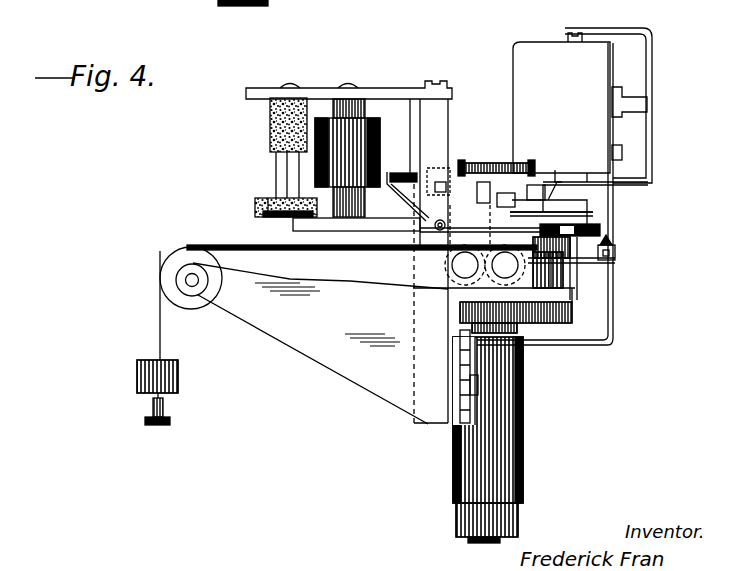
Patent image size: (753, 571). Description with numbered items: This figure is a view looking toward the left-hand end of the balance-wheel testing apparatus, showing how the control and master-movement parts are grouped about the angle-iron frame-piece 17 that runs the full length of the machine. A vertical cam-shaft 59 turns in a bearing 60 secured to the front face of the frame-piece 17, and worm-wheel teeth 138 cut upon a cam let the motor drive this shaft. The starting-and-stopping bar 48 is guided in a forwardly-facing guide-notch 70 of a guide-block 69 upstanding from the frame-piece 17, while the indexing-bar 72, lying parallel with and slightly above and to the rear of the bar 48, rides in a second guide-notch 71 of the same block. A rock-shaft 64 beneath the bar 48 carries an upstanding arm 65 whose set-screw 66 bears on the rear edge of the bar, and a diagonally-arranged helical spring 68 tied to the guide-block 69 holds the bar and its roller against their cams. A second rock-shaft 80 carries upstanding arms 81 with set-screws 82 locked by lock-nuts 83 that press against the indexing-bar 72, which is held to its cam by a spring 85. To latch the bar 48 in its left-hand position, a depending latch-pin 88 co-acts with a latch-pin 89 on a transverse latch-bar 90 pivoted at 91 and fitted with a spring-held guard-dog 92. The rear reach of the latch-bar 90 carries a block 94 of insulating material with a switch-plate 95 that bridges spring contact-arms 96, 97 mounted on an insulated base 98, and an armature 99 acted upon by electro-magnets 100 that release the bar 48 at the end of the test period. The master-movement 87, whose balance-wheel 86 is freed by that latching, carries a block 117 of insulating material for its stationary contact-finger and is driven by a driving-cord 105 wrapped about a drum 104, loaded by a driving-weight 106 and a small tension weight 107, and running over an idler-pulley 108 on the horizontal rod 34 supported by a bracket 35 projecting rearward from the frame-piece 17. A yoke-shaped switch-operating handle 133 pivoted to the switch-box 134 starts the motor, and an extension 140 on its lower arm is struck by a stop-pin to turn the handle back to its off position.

The angle-iron frame-piece 17 is at (456, 416).
The horizontal rod 34 is at (189, 288).
The bracket 35 is at (316, 356).
The starting-and-stopping bar 48 is at (585, 208).
The cam-shaft 59 is at (490, 539).
The bearing 60 is at (523, 423).
The rock-shaft 64 is at (547, 327).
The upstanding arm 65 is at (503, 267).
The set-screw 66 is at (480, 163).
The helical spring 68 is at (498, 163).
The guide-block 69 is at (443, 258).
The guide-notch 70 is at (535, 182).
The guide-notch 71 is at (456, 175).
The indexing-bar 72 is at (514, 173).
The rock-shaft 80 is at (465, 268).
The upstanding arm 81 is at (433, 231).
The set-screw 82 is at (408, 197).
The lock-nut 83 is at (422, 177).
The spring 85 is at (392, 172).
The balance-wheel 86 is at (625, 242).
The master-movement 87 is at (560, 260).
The latch-pin 88 is at (548, 180).
The latch-pin 89 is at (548, 182).
The latch-bar 90 is at (355, 232).
The pivot 91 is at (415, 249).
The guard-dog 92 is at (560, 215).
The block of insulating material 94 is at (257, 213).
The switch-plate 95 is at (268, 200).
The spring contact-arm 96 is at (277, 166).
The spring contact-arm 97 is at (290, 216).
The insulated base 98 is at (270, 121).
The armature 99 is at (345, 207).
The electro-magnet 100 is at (316, 122).
The drum 104 is at (595, 263).
The driving-cord 105 is at (158, 318).
The driving-weight 106 is at (137, 374).
The tension weight 107 is at (159, 426).
The idler-pulley 108 is at (167, 273).
The block of insulating material 117 is at (590, 228).
The switch-operating handle 133 is at (652, 62).
The switch-box 134 is at (522, 50).
The worm-wheel teeth 138 is at (572, 323).
The extension 140 is at (587, 163).